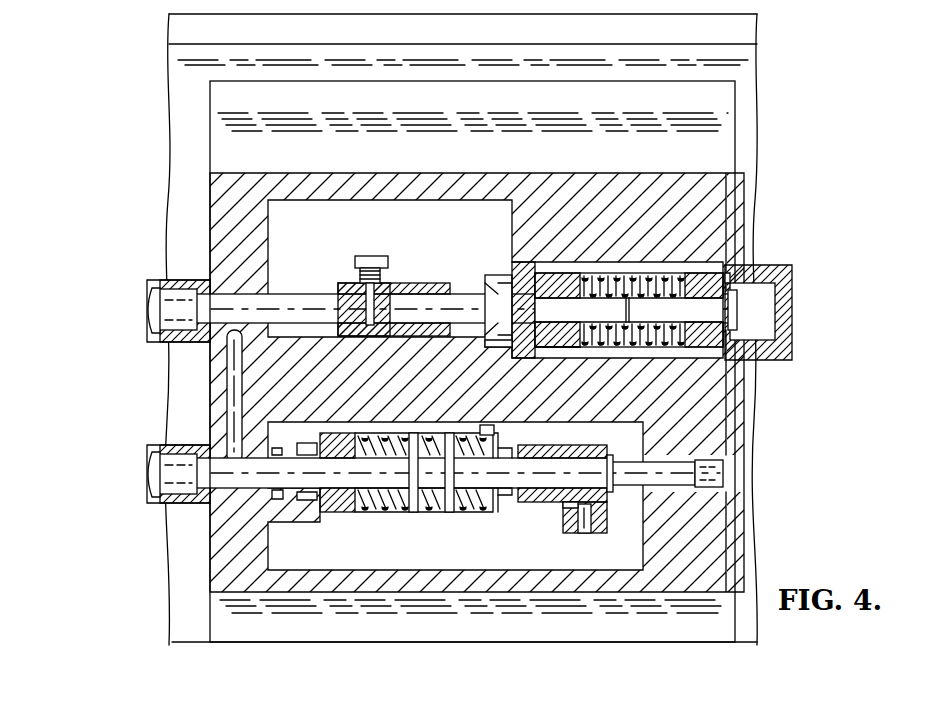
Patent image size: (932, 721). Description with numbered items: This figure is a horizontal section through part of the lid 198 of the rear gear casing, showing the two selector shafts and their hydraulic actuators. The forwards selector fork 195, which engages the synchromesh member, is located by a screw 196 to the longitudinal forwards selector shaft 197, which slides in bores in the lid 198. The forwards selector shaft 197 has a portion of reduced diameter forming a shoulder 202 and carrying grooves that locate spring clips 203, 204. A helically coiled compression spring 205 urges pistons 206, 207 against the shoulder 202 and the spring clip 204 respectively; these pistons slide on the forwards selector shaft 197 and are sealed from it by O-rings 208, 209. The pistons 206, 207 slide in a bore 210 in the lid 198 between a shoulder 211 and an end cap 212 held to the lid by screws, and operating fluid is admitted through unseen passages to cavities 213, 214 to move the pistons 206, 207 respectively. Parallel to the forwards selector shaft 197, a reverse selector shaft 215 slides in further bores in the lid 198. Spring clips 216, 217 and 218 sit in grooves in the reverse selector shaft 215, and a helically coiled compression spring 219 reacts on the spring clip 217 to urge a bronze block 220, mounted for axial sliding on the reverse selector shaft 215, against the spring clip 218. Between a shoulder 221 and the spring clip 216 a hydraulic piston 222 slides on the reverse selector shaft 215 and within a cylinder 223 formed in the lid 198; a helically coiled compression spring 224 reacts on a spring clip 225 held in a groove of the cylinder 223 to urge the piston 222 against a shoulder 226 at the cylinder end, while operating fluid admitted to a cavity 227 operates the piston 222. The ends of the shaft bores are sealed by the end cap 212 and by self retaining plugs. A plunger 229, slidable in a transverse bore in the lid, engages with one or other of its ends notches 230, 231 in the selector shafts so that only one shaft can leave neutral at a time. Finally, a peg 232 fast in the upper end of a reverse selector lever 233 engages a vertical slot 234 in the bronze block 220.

The lid 198 is at (235, 215).
The forwards selector fork 195 is at (345, 288).
The screw 196 is at (372, 256).
The forwards selector shaft 197 is at (312, 298).
The shoulder 202 is at (497, 280).
The piston 206 is at (522, 268).
The helically coiled compression spring 205 is at (600, 272).
The O-ring 208 is at (578, 284).
The O-ring 209 is at (650, 276).
The bore 210 is at (592, 346).
The spring clip 203 is at (600, 349).
The shoulder 211 is at (528, 358).
The cavity 213 is at (510, 348).
The piston 207 is at (752, 282).
The spring clip 204 is at (738, 298).
The cavity 214 is at (765, 320).
The end cap 212 is at (780, 330).
The notch 230 is at (178, 336).
The plunger 229 is at (227, 393).
The notch 231 is at (202, 448).
The reverse selector shaft 215 is at (205, 480).
The cavity 227 is at (278, 448).
The shoulder 226 is at (310, 443).
The cylinder 223 is at (366, 432).
The helically coiled compression spring 224 is at (400, 432).
The spring clip 225 is at (488, 426).
The hydraulic piston 222 is at (352, 510).
The spring clip 216 is at (410, 512).
The spring clip 217 is at (450, 512).
The shoulder 221 is at (318, 492).
The helically coiled compression spring 219 is at (500, 497).
The bronze block 220 is at (560, 446).
The spring clip 218 is at (612, 457).
The peg 232 is at (598, 530).
The reverse selector lever 233 is at (583, 532).
The vertical slot 234 is at (567, 508).